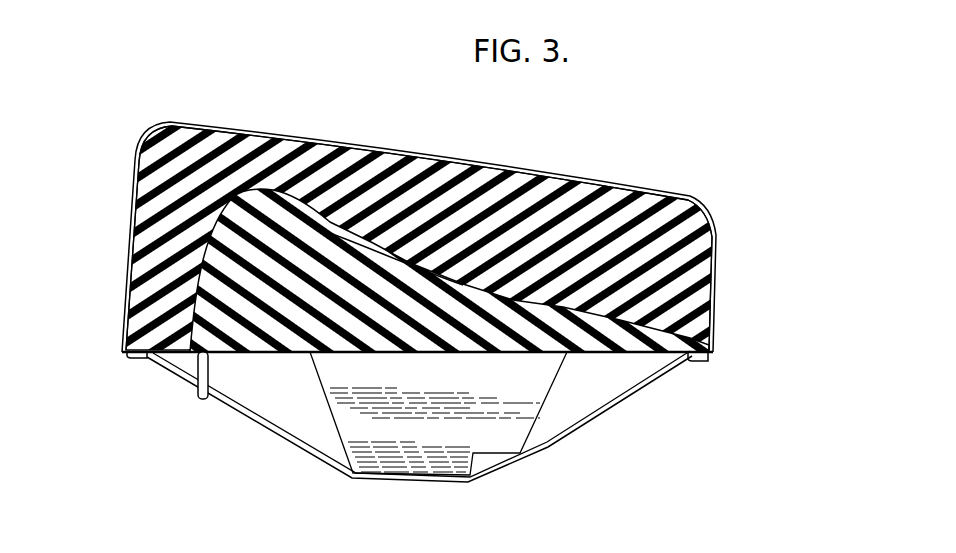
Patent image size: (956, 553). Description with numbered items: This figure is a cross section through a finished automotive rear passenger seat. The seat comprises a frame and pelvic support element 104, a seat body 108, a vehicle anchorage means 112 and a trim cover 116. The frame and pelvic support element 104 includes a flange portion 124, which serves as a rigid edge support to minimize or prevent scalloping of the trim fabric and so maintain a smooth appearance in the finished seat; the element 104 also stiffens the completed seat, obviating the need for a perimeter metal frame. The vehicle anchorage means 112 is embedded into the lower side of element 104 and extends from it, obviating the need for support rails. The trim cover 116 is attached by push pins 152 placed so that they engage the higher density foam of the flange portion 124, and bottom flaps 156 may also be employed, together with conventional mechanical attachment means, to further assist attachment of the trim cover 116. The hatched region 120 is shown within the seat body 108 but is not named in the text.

The frame and pelvic support element 104 is at (546, 309).
The seat body 108 is at (296, 140).
The vehicle anchorage means 112 is at (201, 399).
The trim cover 116 is at (179, 122).
The inner cushion layer 120 is at (300, 273).
The flange portion 124 is at (155, 330).
The push pins 152 is at (136, 359).
The bottom flaps 156 is at (600, 410).